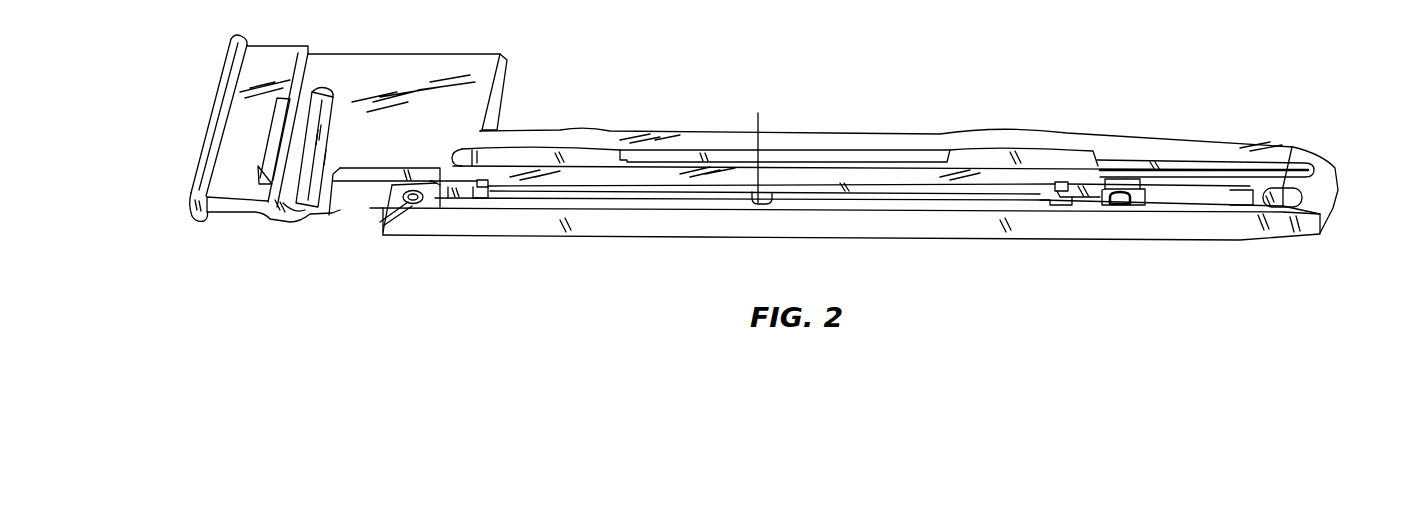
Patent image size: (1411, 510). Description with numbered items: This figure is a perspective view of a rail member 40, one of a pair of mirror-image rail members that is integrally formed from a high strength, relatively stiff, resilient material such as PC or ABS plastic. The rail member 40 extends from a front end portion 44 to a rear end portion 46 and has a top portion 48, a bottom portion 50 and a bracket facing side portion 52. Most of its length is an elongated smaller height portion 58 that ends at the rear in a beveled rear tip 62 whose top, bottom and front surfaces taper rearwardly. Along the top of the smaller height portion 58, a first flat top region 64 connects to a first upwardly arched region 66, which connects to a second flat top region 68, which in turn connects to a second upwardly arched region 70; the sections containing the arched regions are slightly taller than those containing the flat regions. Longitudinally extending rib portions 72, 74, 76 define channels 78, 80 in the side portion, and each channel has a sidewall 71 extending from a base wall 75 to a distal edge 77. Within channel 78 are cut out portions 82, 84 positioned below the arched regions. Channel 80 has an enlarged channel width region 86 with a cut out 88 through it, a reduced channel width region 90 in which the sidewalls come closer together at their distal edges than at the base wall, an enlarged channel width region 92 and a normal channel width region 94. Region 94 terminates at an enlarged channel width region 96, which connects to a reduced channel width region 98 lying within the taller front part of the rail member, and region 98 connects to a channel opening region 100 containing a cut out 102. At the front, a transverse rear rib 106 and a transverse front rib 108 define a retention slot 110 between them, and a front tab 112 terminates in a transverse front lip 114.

The rail member 40 is at (1190, 50).
The front end portion 44 is at (274, 52).
The rear end portion 46 is at (1308, 162).
The top portion 48 is at (713, 133).
The bottom portion 50 is at (610, 223).
The bracket facing side portion 52 is at (860, 177).
The elongated smaller height portion 58 is at (877, 133).
The beveled rear tip 62 is at (1327, 160).
The first flat top region 64 is at (1228, 143).
The first upwardly arched region 66 is at (1027, 130).
The second flat top region 68 is at (805, 133).
The second upwardly arched region 70 is at (553, 127).
The channel sidewall 71 is at (762, 143).
The rib portion 72 is at (928, 138).
The rib portion 74 is at (948, 173).
The base wall 75 is at (537, 197).
The rib portion 76 is at (1012, 203).
The distal edge 77 is at (587, 183).
The channel 78 is at (1133, 160).
The channel 80 is at (733, 197).
The cut out portion 82 is at (987, 157).
The cut out portion 84 is at (530, 157).
The enlarged channel width region 86 is at (1107, 205).
The cut out 88 is at (1125, 205).
The reduced channel width region 90 is at (1080, 205).
The enlarged channel width region 92 is at (1067, 182).
The normal channel width region 94 is at (907, 195).
The enlarged channel width region 96 is at (478, 190).
The reduced channel width region 98 is at (450, 192).
The channel opening region 100 is at (385, 200).
The cut out 102 is at (413, 203).
The transverse rear rib 106 is at (330, 88).
The transverse front rib 108 is at (240, 183).
The retention slot 110 is at (283, 188).
The front tab 112 is at (237, 155).
The transverse front lip 114 is at (218, 103).